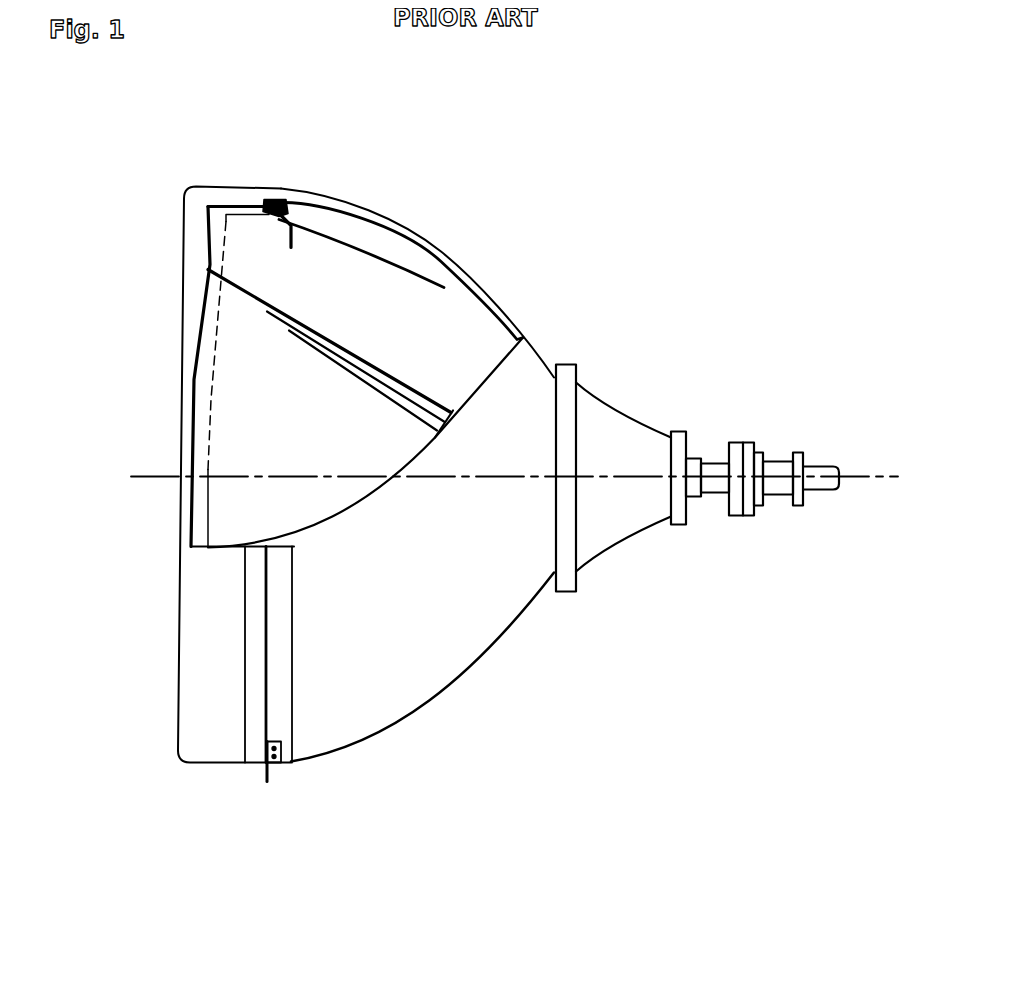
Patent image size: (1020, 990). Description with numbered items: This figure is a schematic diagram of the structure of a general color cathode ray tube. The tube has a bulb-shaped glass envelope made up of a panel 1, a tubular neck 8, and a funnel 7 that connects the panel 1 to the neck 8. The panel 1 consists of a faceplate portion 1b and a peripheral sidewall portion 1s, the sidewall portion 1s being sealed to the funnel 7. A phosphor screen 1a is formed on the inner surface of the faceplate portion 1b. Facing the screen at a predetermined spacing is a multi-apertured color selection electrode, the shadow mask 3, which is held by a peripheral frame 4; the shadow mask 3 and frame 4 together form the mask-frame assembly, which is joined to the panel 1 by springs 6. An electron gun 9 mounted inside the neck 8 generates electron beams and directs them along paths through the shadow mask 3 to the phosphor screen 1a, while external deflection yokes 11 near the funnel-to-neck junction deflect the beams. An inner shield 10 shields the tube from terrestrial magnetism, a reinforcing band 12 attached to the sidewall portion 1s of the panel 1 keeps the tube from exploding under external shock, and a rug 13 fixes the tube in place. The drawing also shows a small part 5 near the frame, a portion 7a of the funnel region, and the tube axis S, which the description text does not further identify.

The panel 1 is at (177, 650).
The phosphor screen 1a is at (203, 240).
The faceplate portion 1b is at (178, 373).
The peripheral sidewall portion 1s is at (203, 617).
The shadow mask 3 is at (217, 292).
The peripheral frame 4 is at (298, 231).
The fixing portion 5 is at (272, 203).
The springs 6 is at (271, 207).
The funnel 7 is at (375, 215).
The reflector lower extension 7a is at (264, 584).
The tubular neck 8 is at (593, 578).
The electron gun 9 is at (775, 500).
The inner shield 10 is at (425, 278).
The external deflection yokes 11 is at (618, 412).
The reinforcing band 12 is at (243, 700).
The rug 13 is at (263, 783).
The optical axis S is at (865, 478).